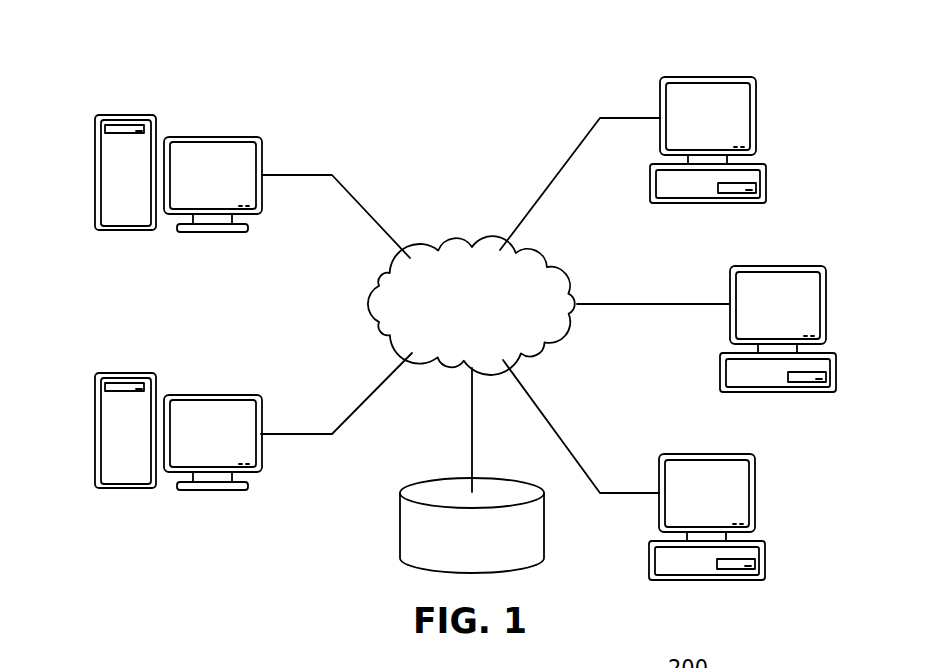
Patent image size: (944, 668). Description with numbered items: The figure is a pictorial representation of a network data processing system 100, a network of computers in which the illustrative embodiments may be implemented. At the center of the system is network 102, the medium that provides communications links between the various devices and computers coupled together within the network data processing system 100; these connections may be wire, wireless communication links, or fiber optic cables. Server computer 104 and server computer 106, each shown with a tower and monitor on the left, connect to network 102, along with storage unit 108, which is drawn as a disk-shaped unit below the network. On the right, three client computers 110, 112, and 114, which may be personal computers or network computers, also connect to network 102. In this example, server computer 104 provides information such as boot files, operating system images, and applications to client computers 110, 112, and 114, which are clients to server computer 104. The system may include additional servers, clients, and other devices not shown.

The network data processing system 100 is at (340, 89).
The network 102 is at (465, 240).
The server computer 104 is at (95, 174).
The server computer 106 is at (95, 431).
The storage unit 108 is at (400, 527).
The client computer 110 is at (766, 185).
The client computer 112 is at (837, 372).
The client computer 114 is at (766, 560).